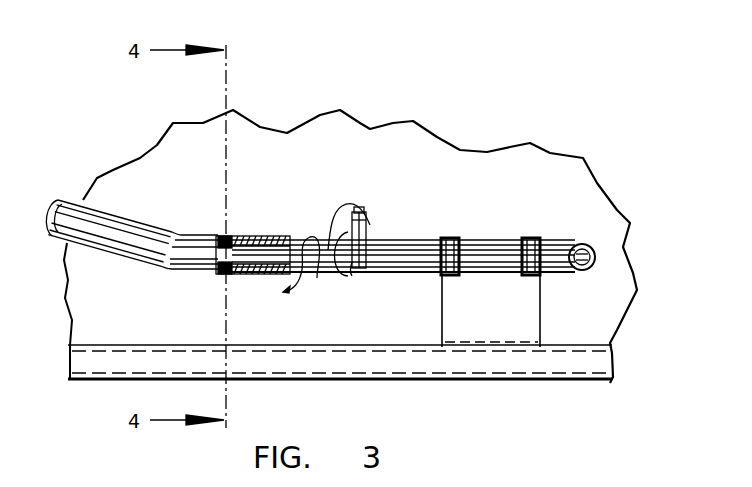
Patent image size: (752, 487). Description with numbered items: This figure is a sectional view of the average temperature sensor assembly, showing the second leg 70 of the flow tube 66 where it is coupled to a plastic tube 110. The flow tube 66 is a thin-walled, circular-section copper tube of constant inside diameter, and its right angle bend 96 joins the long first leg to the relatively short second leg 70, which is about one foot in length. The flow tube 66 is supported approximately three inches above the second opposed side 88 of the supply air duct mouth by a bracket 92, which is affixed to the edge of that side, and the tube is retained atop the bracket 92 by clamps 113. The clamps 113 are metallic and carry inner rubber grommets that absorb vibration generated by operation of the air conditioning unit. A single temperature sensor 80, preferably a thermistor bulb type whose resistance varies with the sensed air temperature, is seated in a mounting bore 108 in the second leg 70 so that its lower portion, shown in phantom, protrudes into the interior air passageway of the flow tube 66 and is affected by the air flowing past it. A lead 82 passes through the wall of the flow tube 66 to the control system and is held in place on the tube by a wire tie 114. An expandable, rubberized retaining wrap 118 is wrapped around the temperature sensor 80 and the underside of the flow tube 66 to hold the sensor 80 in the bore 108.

The flow tube 66 is at (413, 240).
The second leg 70 is at (338, 272).
The temperature sensor 80 is at (368, 224).
The lead 82 is at (333, 218).
The second opposed side 88 is at (180, 344).
The bracket 92 is at (527, 308).
The right angle bend 96 is at (596, 253).
The mounting bore 108 is at (354, 272).
The plastic tube 110 is at (112, 214).
The clamps 113 is at (527, 250).
The wire tie 114 is at (313, 278).
The retaining wrap 118 is at (363, 206).